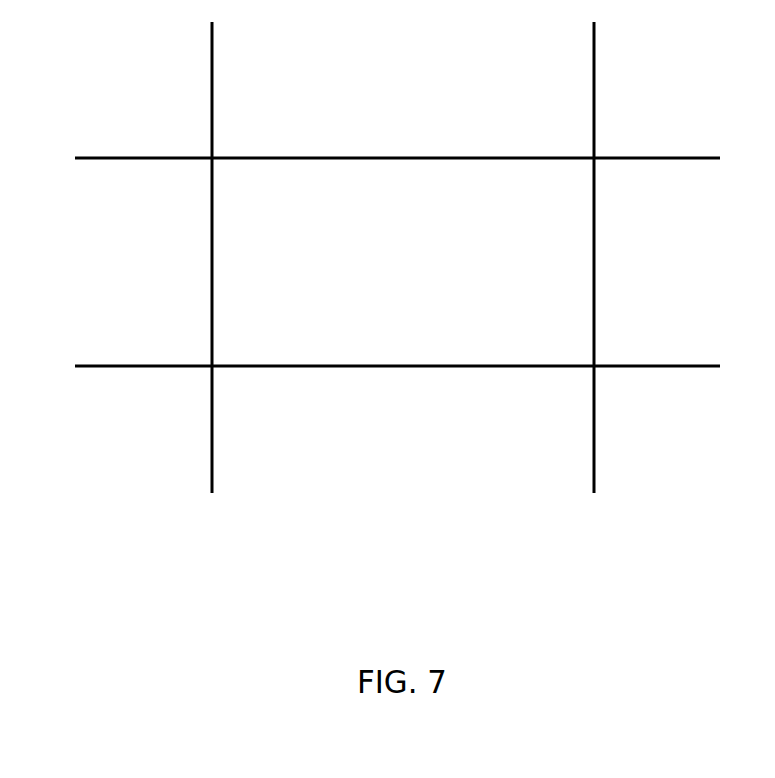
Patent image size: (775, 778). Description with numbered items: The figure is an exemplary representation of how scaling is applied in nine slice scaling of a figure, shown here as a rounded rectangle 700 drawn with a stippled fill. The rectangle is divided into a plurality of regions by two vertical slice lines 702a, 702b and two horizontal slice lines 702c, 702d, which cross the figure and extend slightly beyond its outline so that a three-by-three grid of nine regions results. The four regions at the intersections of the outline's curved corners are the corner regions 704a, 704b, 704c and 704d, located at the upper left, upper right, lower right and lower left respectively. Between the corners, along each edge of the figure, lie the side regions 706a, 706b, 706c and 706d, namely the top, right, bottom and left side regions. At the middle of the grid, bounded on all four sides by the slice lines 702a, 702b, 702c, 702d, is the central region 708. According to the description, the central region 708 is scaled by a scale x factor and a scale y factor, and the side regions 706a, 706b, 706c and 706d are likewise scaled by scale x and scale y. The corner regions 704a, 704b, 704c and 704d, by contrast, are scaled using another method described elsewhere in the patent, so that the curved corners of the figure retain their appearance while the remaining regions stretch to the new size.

The touch sensor layout 700 is at (678, 468).
The vertical slice line 702a is at (211, 480).
The vertical slice line 702b is at (593, 24).
The horizontal slice line 702c is at (82, 370).
The horizontal slice line 702d is at (697, 161).
The corner region 704a is at (167, 114).
The corner region 704b is at (637, 114).
The corner region 704c is at (637, 412).
The corner region 704d is at (167, 412).
The side region 706a is at (403, 114).
The side region 706b is at (637, 262).
The side region 706c is at (403, 412).
The side region 706d is at (167, 262).
The central region 708 is at (403, 262).